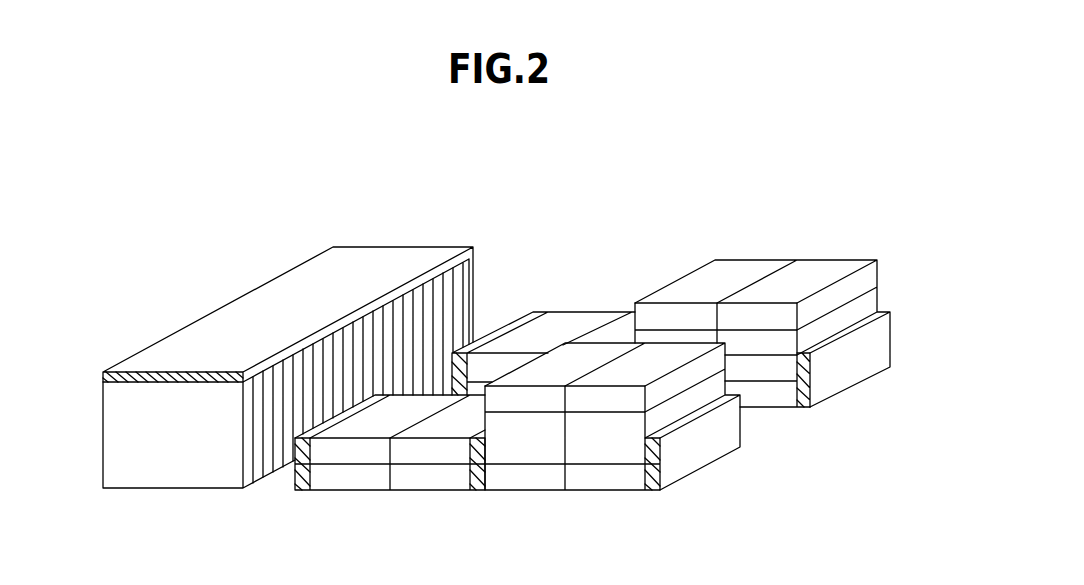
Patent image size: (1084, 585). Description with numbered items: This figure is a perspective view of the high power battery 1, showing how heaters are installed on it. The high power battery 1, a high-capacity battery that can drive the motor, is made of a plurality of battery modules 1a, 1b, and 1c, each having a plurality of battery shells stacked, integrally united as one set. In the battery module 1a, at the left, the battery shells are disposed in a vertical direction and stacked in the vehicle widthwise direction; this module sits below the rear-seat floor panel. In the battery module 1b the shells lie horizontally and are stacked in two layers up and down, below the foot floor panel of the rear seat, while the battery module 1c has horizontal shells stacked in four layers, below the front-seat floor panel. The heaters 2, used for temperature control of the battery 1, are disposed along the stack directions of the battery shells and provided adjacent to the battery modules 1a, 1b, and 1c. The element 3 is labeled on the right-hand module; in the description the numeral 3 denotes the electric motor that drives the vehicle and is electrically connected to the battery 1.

The high power battery 1 is at (826, 190).
The battery module 1a is at (480, 281).
The battery module 1b is at (632, 304).
The battery module 1c is at (837, 257).
The heater 2 is at (197, 319).
The electric motor 3 is at (805, 408).